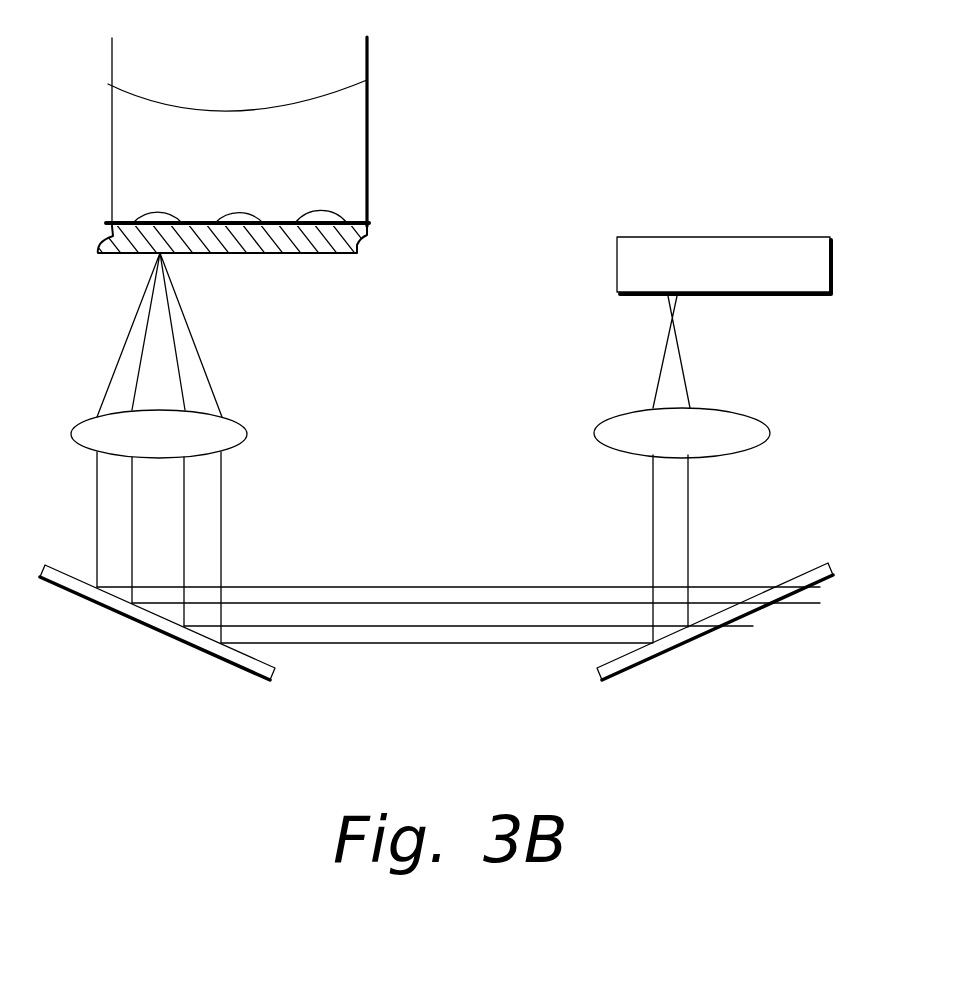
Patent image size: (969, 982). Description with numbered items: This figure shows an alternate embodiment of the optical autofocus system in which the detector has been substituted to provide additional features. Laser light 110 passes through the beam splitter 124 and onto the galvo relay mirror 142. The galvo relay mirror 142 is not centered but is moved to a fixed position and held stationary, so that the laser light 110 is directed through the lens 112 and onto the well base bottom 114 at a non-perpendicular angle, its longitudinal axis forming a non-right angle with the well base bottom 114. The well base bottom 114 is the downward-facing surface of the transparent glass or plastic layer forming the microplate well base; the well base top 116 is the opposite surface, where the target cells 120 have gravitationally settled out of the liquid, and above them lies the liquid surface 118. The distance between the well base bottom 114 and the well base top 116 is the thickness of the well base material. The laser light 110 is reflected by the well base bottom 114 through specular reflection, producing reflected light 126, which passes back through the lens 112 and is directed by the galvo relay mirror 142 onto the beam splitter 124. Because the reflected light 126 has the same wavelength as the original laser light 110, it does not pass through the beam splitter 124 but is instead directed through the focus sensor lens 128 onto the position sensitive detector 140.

The laser light 110 is at (120, 384).
The lens 112 is at (222, 433).
The well base bottom 114 is at (317, 253).
The well base top 116 is at (198, 219).
The liquid surface 118 is at (288, 109).
The target cells 120 is at (328, 208).
The beam splitter 124 is at (728, 615).
The reflected light 126 is at (183, 338).
The focus sensor lens 128 is at (747, 431).
The position sensitive detector 140 is at (792, 236).
The galvo relay mirror 142 is at (164, 623).